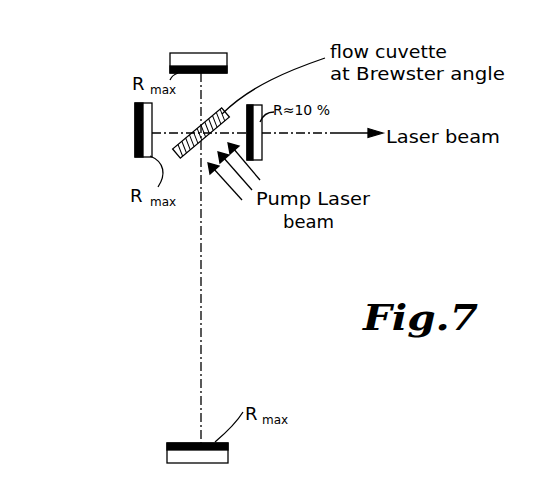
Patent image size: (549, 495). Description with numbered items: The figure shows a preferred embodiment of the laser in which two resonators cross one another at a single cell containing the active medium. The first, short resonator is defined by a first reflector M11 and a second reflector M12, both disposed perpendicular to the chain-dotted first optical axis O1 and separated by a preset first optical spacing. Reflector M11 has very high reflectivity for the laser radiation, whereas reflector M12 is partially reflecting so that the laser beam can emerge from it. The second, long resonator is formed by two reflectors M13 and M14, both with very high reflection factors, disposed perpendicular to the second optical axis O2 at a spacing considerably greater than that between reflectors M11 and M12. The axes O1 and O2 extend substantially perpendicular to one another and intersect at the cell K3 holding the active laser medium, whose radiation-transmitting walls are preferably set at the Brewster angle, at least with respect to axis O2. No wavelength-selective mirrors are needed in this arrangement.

The first reflector M11 is at (118, 145).
The second reflector M12 is at (259, 144).
The reflector of the long resonator M13 is at (221, 57).
The reflector of the long resonator M14 is at (181, 443).
The cell K3 is at (206, 117).
The first optical axis O1 is at (155, 125).
The second optical axis O2 is at (202, 275).